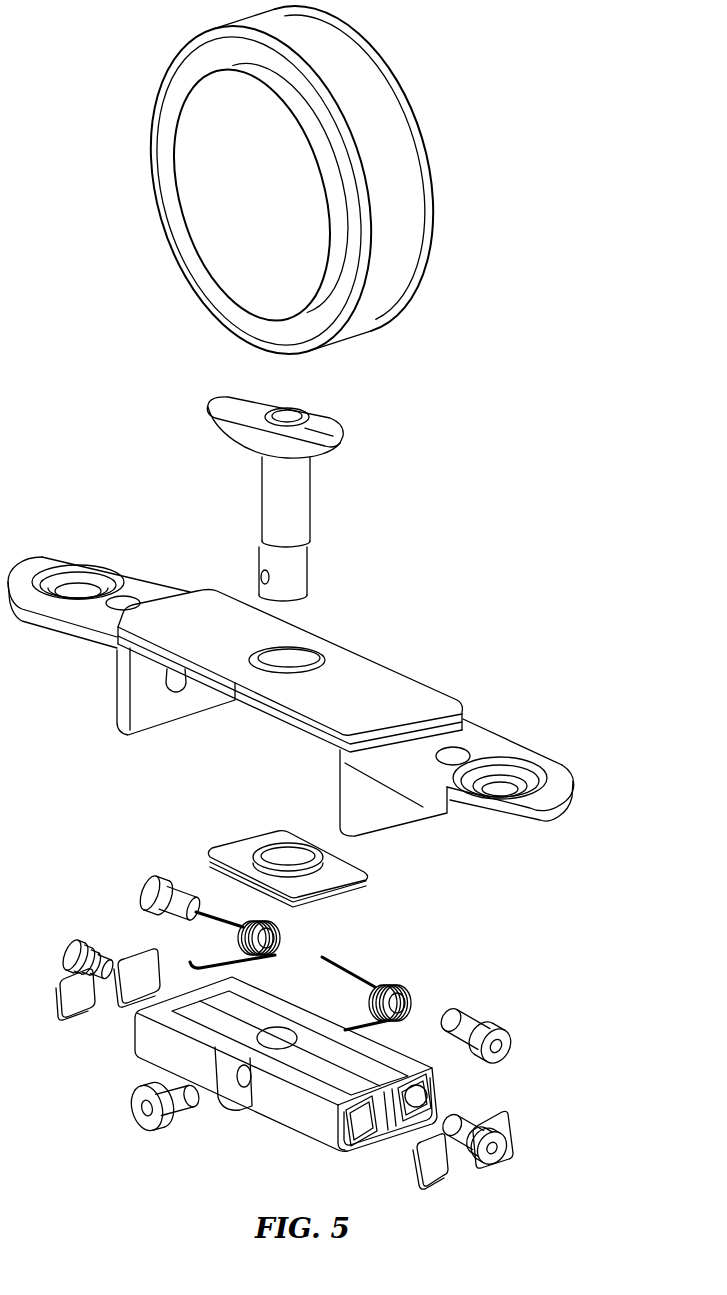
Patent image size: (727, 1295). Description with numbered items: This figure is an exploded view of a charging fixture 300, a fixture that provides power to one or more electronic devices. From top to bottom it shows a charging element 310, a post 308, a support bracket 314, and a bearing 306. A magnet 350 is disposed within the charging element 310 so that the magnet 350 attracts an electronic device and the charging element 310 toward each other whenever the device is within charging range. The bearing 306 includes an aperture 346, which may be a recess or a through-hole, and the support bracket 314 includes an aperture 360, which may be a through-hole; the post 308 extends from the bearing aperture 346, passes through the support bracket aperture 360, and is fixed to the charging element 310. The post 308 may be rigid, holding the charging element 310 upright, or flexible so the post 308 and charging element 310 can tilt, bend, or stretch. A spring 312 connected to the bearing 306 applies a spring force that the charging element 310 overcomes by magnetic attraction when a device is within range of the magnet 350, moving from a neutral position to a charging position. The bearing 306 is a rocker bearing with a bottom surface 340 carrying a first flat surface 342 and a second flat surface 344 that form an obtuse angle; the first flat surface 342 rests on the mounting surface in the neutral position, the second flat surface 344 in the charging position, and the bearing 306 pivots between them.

The charging fixture 300 is at (532, 148).
The charging element 310 is at (197, 155).
The magnet 350 is at (383, 296).
The post 308 is at (290, 500).
The support bracket 314 is at (408, 700).
The aperture 360 is at (300, 663).
The spring 312 is at (280, 932).
The bearing 306 is at (286, 1091).
The aperture 346 is at (172, 1066).
The first flat surface 342 is at (363, 1153).
The bottom surface 340 is at (385, 1150).
The second flat surface 344 is at (427, 1128).